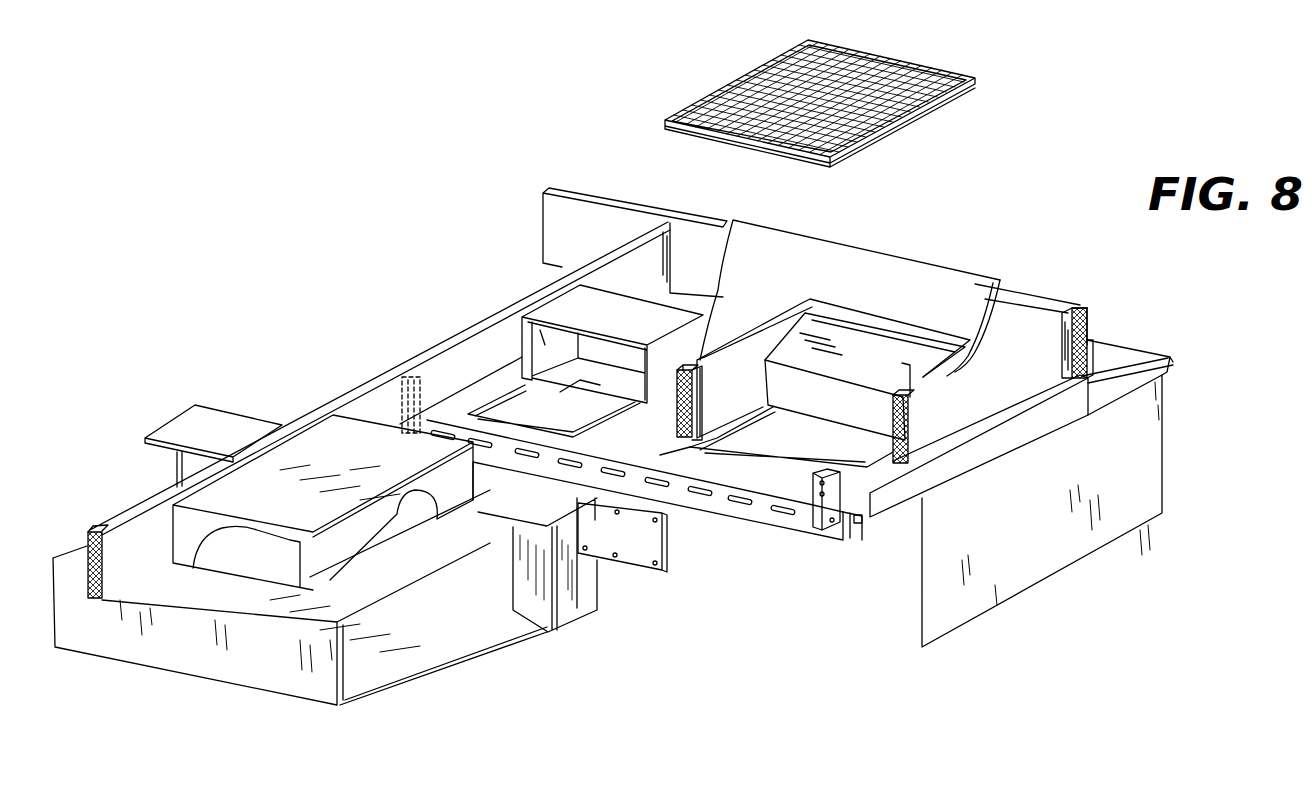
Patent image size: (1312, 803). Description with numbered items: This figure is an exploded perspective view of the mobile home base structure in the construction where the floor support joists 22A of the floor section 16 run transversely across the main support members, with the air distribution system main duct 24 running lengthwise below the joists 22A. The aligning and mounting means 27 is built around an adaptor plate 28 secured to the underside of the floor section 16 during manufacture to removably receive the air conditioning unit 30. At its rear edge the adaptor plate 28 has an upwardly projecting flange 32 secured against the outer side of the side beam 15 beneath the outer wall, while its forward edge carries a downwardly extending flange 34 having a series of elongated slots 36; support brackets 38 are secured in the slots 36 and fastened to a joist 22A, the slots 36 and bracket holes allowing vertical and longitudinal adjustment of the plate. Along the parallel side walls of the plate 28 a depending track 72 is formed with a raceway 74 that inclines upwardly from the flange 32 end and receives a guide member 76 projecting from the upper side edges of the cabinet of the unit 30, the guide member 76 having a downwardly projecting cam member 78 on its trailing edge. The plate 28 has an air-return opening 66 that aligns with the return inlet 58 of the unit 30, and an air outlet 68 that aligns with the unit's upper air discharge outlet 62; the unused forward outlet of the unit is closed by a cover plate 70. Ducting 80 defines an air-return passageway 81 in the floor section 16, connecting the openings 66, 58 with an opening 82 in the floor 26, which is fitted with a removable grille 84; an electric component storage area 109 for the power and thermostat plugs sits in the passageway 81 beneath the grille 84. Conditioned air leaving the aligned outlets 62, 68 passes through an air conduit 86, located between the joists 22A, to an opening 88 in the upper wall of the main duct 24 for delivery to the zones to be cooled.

The grille 84 is at (925, 72).
The adaptor plate 28 is at (684, 290).
The floor section 16 is at (860, 243).
The floor 26 is at (975, 283).
The floor support joists 22A is at (497, 320).
The side beam 15 is at (1088, 316).
The upwardly projecting flange 32 is at (1095, 358).
The cam member 78 is at (1168, 364).
The guide member 76 is at (1110, 397).
The air conditioning unit 30 is at (1043, 568).
The track 72 is at (943, 480).
The aligning and mounting means 27 is at (635, 529).
The elongated slots 36 is at (777, 508).
The support brackets 38 is at (422, 400).
The downwardly extending flange 34 is at (845, 518).
The raceway 74 is at (858, 523).
The cover plate 70 is at (637, 570).
The opening in duct 88 is at (347, 556).
The air distribution system main duct 24 is at (222, 675).
The air conduit 86 is at (645, 331).
The air discharge outlet 62 is at (562, 393).
The air outlet 68 is at (493, 406).
The ducting 80 is at (833, 363).
The air-return passageway 81 is at (742, 410).
The floor opening 82 is at (902, 372).
The electric component storage area 109 is at (838, 337).
The return inlet 58 is at (783, 444).
The air-return opening 66 is at (697, 452).